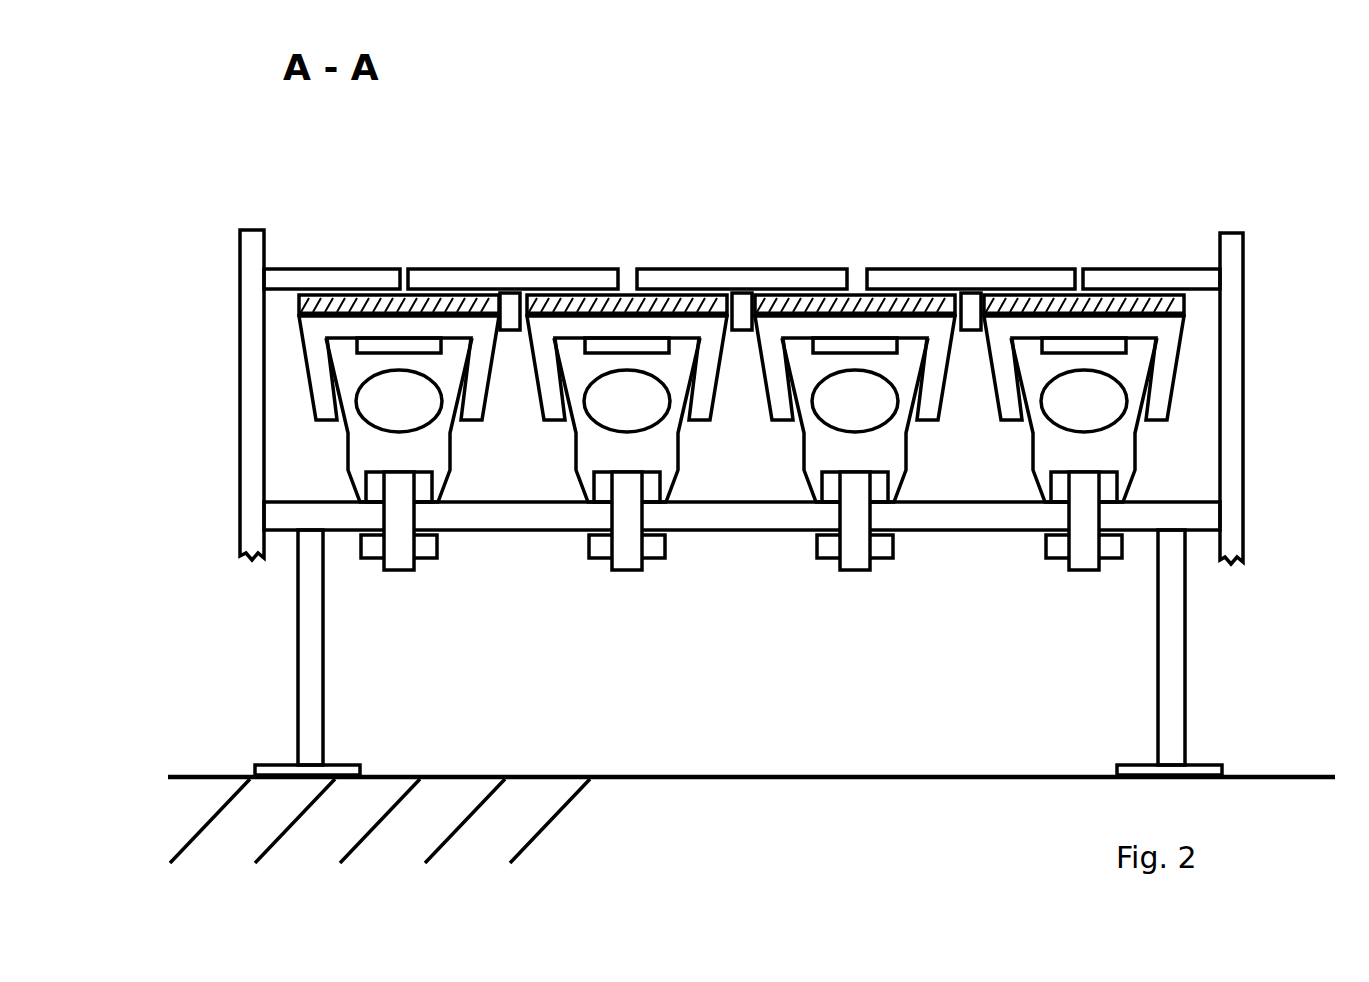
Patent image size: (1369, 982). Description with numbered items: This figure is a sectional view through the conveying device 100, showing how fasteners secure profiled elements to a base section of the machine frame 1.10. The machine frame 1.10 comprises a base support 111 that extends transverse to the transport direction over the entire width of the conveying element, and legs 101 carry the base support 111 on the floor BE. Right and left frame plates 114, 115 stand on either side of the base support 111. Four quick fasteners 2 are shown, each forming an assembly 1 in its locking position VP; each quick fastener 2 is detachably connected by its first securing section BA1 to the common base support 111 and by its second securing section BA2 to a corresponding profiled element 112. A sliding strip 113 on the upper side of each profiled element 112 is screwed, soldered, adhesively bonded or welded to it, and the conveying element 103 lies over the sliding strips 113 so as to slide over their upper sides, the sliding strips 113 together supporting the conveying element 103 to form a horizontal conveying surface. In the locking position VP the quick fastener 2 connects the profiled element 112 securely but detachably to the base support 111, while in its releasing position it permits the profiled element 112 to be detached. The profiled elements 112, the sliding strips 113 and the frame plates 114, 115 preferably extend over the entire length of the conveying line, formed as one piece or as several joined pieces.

The conveying device 100 is at (179, 145).
The machine frame 1.10 is at (189, 561).
The left frame plate 114 is at (253, 402).
The right frame plate 115 is at (1233, 428).
The base support 111 is at (733, 522).
The profiled element 112 is at (1082, 183).
The sliding strip 113 is at (452, 300).
The conveying element 103 is at (963, 253).
The legs 101 is at (312, 650).
The assembly 1 is at (328, 483).
The quick fastener 2 is at (432, 458).
The first securing section BA1 is at (357, 561).
The second securing section BA2 is at (284, 392).
The locking position VP is at (434, 608).
The floor BE is at (1274, 763).